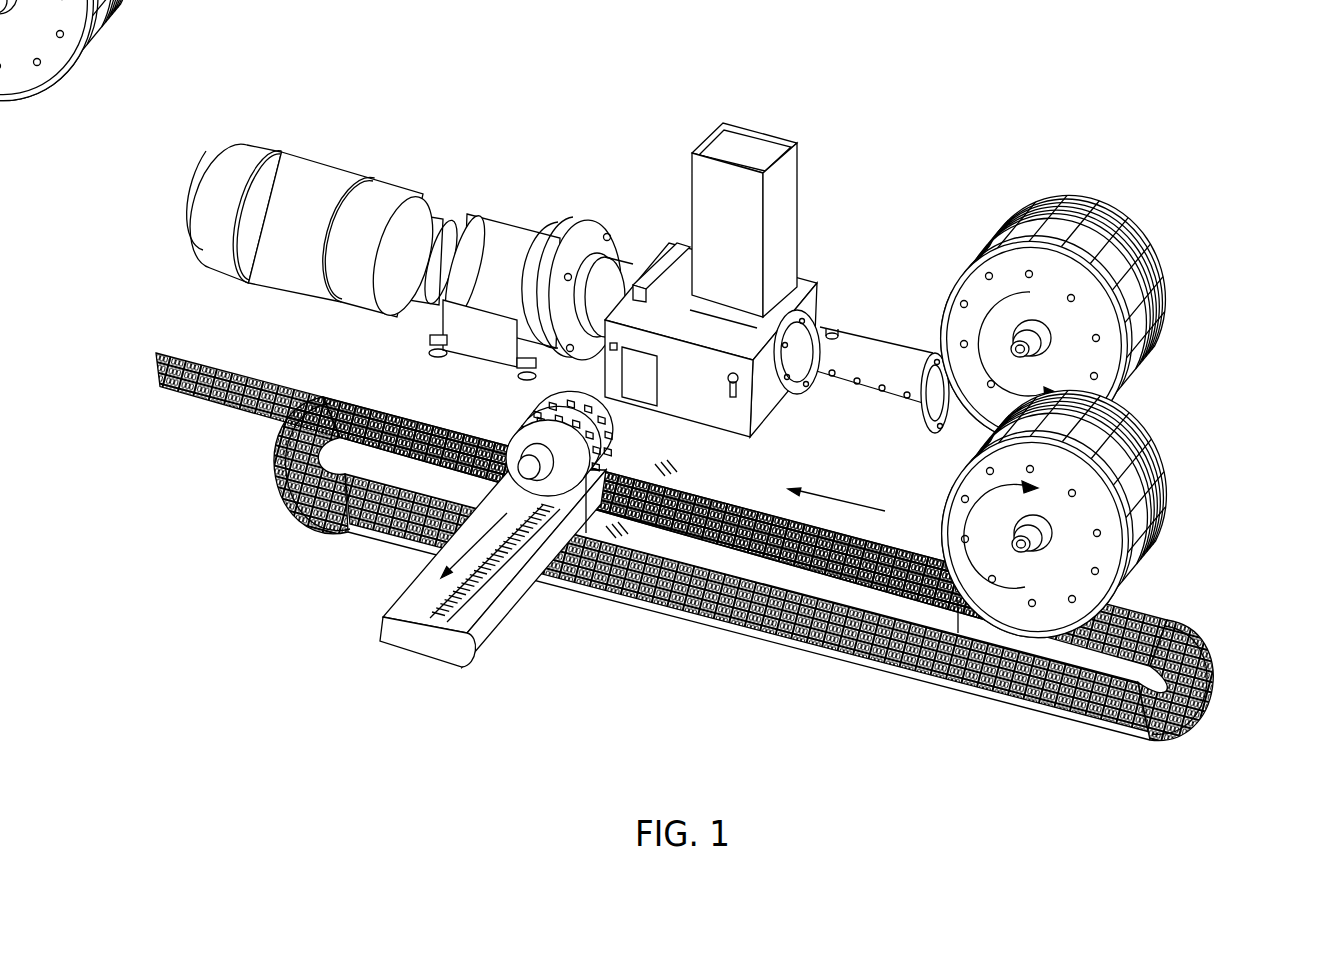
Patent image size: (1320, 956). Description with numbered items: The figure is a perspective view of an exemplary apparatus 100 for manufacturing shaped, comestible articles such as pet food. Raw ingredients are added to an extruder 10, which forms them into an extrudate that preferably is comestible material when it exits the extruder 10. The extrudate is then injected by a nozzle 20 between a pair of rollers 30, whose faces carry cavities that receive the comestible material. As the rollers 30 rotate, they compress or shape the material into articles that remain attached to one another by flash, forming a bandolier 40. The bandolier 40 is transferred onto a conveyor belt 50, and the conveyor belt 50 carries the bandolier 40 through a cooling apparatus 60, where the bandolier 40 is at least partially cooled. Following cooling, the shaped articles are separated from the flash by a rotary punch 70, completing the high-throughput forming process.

The apparatus 100 is at (178, 108).
The extruder 10 is at (400, 188).
The nozzle 20 is at (963, 403).
The rollers 30 is at (1153, 483).
The bandolier 40 is at (965, 598).
The conveyor belt 50 is at (1182, 703).
The cooling apparatus 60 is at (713, 555).
The rotary punch 70 is at (387, 537).